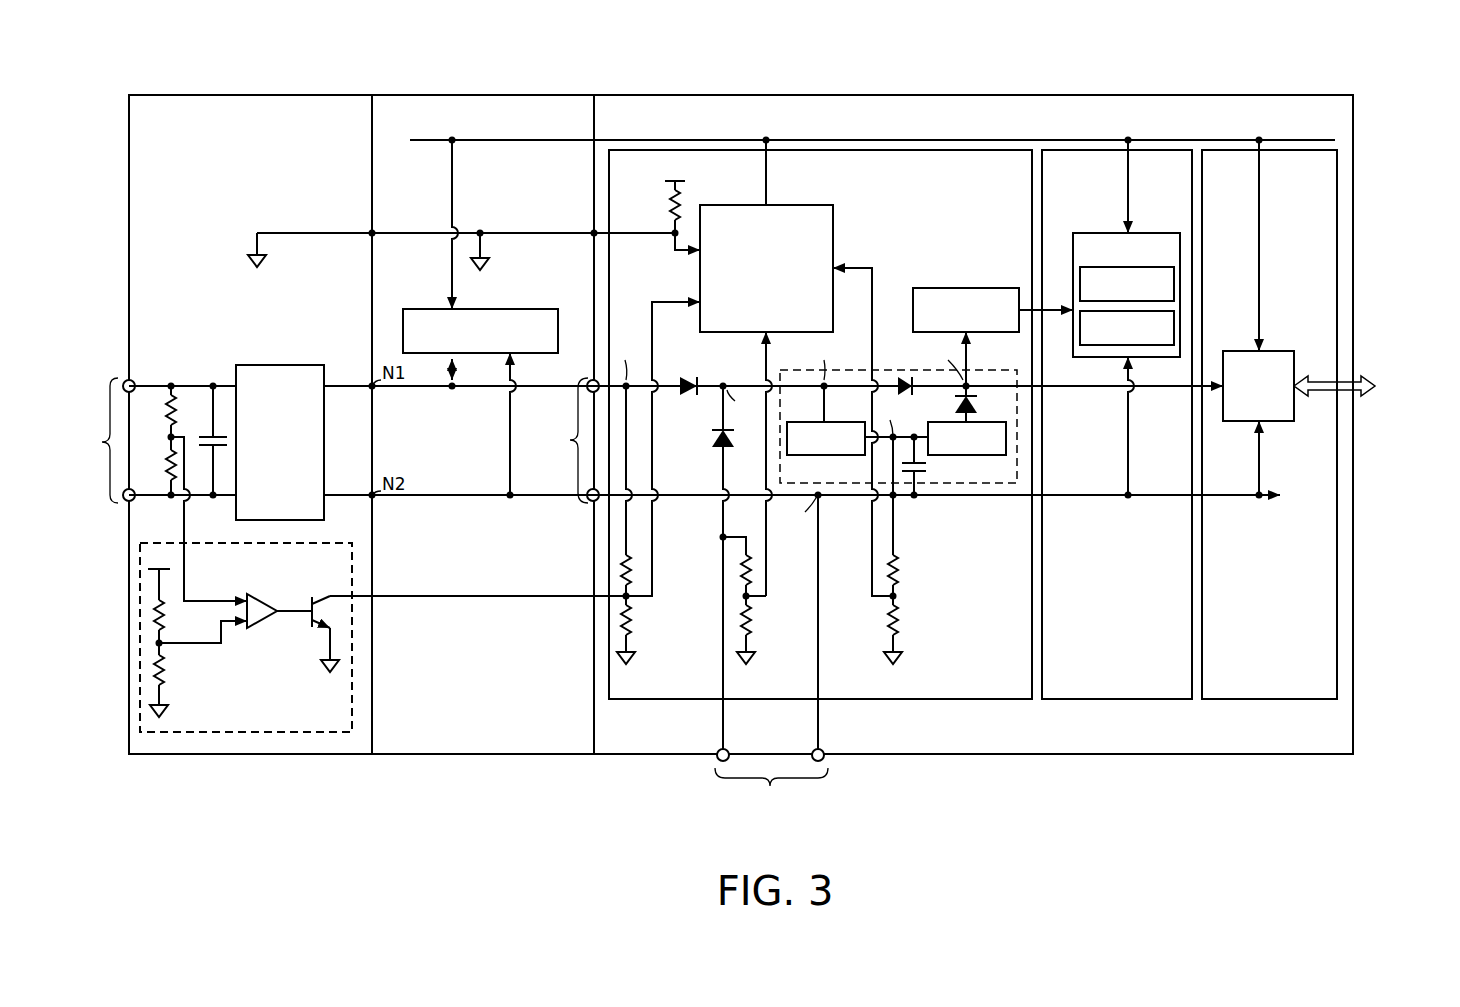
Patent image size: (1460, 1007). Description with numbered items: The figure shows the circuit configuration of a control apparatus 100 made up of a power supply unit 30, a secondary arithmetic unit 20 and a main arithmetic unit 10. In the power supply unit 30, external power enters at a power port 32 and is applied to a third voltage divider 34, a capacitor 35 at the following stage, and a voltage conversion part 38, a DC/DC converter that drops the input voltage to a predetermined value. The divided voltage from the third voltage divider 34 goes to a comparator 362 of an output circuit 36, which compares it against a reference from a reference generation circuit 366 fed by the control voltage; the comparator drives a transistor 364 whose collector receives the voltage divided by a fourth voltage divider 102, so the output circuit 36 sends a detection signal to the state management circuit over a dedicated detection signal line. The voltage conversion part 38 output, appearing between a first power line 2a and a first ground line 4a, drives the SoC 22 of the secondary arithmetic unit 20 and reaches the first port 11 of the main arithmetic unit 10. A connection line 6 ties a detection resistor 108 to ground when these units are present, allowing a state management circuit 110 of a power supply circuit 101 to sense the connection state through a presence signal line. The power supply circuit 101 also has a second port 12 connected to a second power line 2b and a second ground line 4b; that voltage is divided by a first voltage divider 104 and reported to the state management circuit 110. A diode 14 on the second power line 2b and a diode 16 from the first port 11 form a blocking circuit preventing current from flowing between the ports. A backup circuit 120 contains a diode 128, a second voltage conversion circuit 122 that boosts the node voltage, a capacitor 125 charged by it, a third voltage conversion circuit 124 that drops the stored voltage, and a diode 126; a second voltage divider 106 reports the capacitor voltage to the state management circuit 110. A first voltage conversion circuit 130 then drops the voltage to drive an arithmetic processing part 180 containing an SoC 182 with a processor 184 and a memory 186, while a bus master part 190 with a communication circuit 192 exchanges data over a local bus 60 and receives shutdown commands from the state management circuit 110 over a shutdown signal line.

The control apparatus 100 is at (1303, 57).
The power supply unit 30 is at (257, 95).
The secondary arithmetic unit 20 is at (485, 95).
The main arithmetic unit 10 is at (977, 95).
The connection line 6 is at (286, 233).
The power port 32 is at (103, 440).
The third voltage divider 34 is at (162, 400).
The capacitor 35 is at (201, 437).
The output circuit 36 is at (252, 625).
The voltage conversion part 38 is at (270, 366).
The comparator 362 is at (270, 620).
The transistor 364 is at (309, 601).
The reference generation circuit 366 is at (172, 662).
The SoC 22 is at (517, 309).
The first port 11 is at (568, 440).
The first power line 2a is at (345, 386).
The first ground line 4a is at (345, 495).
The second power line 2b is at (723, 588).
The second ground line 4b is at (818, 588).
The second port 12 is at (771, 778).
The power supply circuit 101 is at (701, 447).
The state management circuit 110 is at (798, 205).
The detection resistor 108 is at (663, 205).
The fourth voltage divider 102 is at (642, 630).
The first voltage divider 104 is at (762, 630).
The second voltage divider 106 is at (908, 630).
The diode 14 is at (712, 445).
The diode 16 is at (691, 388).
The backup circuit 120 is at (899, 442).
The second voltage conversion circuit 122 is at (815, 456).
The third voltage conversion circuit 124 is at (957, 456).
The capacitor 125 is at (916, 482).
The diode 126 is at (972, 400).
The diode 128 is at (900, 378).
The first voltage conversion circuit 130 is at (964, 288).
The arithmetic processing part 180 is at (1117, 432).
The SoC 182 is at (1127, 319).
The processor 184 is at (1165, 267).
The memory 186 is at (1165, 346).
The bus master part 190 is at (1269, 432).
The communication circuit 192 is at (1273, 351).
The local bus 60 is at (1368, 388).